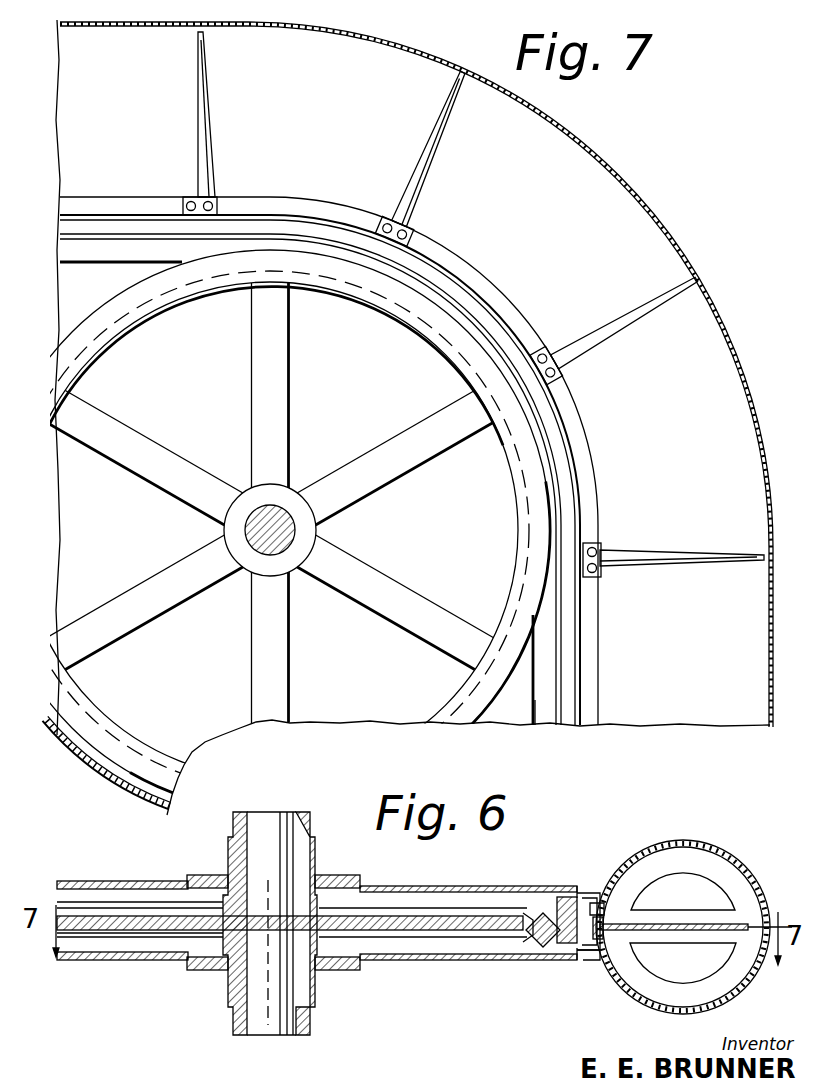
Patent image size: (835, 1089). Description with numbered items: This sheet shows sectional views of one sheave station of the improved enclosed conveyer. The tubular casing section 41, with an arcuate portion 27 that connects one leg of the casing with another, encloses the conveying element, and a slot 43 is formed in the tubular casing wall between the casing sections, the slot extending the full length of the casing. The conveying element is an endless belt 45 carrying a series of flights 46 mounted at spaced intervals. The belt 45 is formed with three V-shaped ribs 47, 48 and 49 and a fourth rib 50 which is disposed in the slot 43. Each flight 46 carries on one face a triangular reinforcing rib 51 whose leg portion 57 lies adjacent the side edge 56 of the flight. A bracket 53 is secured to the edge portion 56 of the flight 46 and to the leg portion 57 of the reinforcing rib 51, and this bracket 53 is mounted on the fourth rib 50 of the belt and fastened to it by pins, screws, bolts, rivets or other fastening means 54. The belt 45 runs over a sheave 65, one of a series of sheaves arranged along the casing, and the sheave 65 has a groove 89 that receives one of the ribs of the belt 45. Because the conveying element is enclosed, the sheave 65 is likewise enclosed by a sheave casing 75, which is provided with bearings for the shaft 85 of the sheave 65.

In FIG. 7, the casing section 41 is at (665, 218).
In FIG. 6, the casing section 41 is at (762, 883).
In FIG. 7, the arcuate portion 27 is at (577, 181).
In FIG. 6, the arcuate portion 27 is at (720, 849).
In FIG. 7, the endless belt 45 is at (100, 226).
In FIG. 6, the endless belt 45 is at (560, 946).
In FIG. 7, the flight 46 is at (198, 80).
In FIG. 6, the flight 46 is at (670, 856).
In FIG. 7, the V-shaped rib 47 is at (565, 470).
In FIG. 6, the V-shaped rib 47 is at (562, 900).
In FIG. 7, the V-shaped rib 48 is at (540, 705).
In FIG. 6, the V-shaped rib 48 is at (543, 935).
In FIG. 6, the V-shaped rib 49 is at (578, 958).
In FIG. 7, the fourth rib 50 is at (565, 407).
In FIG. 6, the fourth rib 50 is at (603, 920).
In FIG. 7, the reinforcing rib 51 is at (212, 136).
In FIG. 7, the bracket 53 is at (185, 197).
In FIG. 7, the fastening means 54 is at (210, 200).
In FIG. 7, the side edge of flight 56 is at (402, 222).
In FIG. 7, the leg portion of reinforcing rib 57 is at (415, 227).
In FIG. 7, the sheave 65 is at (193, 290).
In FIG. 6, the sheave 65 is at (420, 930).
In FIG. 7, the sheave casing 75 is at (117, 788).
In FIG. 6, the sheave casing 75 is at (118, 960).
In FIG. 7, the sheave shaft 85 is at (290, 526).
In FIG. 6, the sheave shaft 85 is at (270, 1025).
In FIG. 6, the groove 89 is at (523, 920).
In FIG. 6, the slot 43 is at (595, 903).